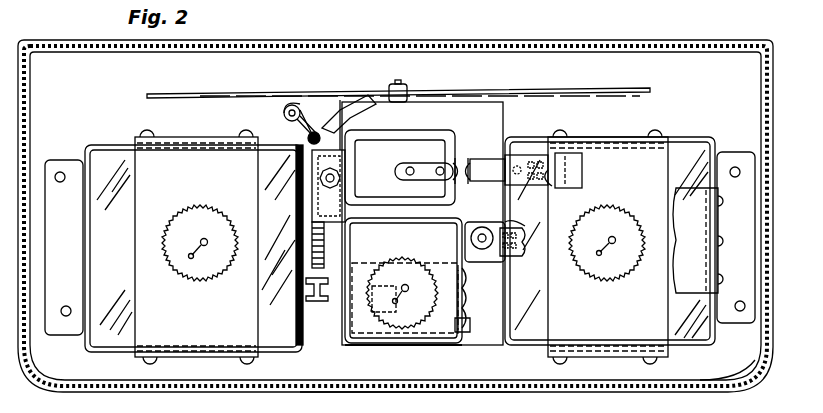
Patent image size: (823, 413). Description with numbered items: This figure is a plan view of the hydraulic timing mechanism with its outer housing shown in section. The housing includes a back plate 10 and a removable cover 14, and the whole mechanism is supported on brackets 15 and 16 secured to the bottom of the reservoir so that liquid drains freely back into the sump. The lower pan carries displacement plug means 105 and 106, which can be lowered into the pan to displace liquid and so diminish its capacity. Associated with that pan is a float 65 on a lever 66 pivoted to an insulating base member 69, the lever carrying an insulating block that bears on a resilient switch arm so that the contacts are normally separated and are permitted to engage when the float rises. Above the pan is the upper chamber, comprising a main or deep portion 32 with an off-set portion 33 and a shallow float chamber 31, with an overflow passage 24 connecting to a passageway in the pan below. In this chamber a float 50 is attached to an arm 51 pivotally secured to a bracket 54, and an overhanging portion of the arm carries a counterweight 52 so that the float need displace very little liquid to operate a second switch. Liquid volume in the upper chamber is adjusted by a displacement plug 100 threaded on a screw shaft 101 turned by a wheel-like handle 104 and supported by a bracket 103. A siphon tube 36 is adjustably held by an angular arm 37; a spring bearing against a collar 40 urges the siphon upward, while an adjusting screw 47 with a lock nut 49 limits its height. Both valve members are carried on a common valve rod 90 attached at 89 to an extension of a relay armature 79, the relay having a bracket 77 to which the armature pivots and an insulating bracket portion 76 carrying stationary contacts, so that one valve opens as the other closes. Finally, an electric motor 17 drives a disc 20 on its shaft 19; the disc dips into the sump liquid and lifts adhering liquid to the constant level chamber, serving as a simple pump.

The back plate 10 is at (684, 42).
The removable cover 14 is at (405, 392).
The bracket 15 is at (68, 170).
The bracket 16 is at (700, 254).
The electric motor 17 is at (740, 355).
The shaft 19 is at (400, 82).
The disc 20 is at (517, 92).
The overflow passage 24 is at (338, 244).
The float chamber 31 is at (465, 135).
The main portion 32 is at (345, 338).
The off-set portion 33 is at (507, 226).
The siphon tube 36 is at (298, 105).
The angular arm 37 is at (294, 126).
The collar 40 is at (283, 108).
The adjusting screw 47 is at (348, 185).
The lock nut 49 is at (347, 160).
The float 50 is at (425, 140).
The arm 51 is at (478, 165).
The counterweight 52 is at (583, 170).
The bracket 54 is at (552, 182).
The float 65 is at (468, 325).
The lever 66 is at (328, 300).
The insulating base member 69 is at (280, 296).
The insulating bracket portion 76 is at (312, 259).
The bracket 77 is at (352, 108).
The relay armature 79 is at (516, 258).
The attachment point 89 is at (486, 260).
The valve rod 90 is at (482, 228).
The displacement plug 100 is at (340, 235).
The screw shaft 101 is at (411, 297).
The bracket 103 is at (463, 298).
The wheel-like handle 104 is at (405, 265).
The displacement plug means 105 is at (100, 268).
The displacement plug means 106 is at (688, 142).